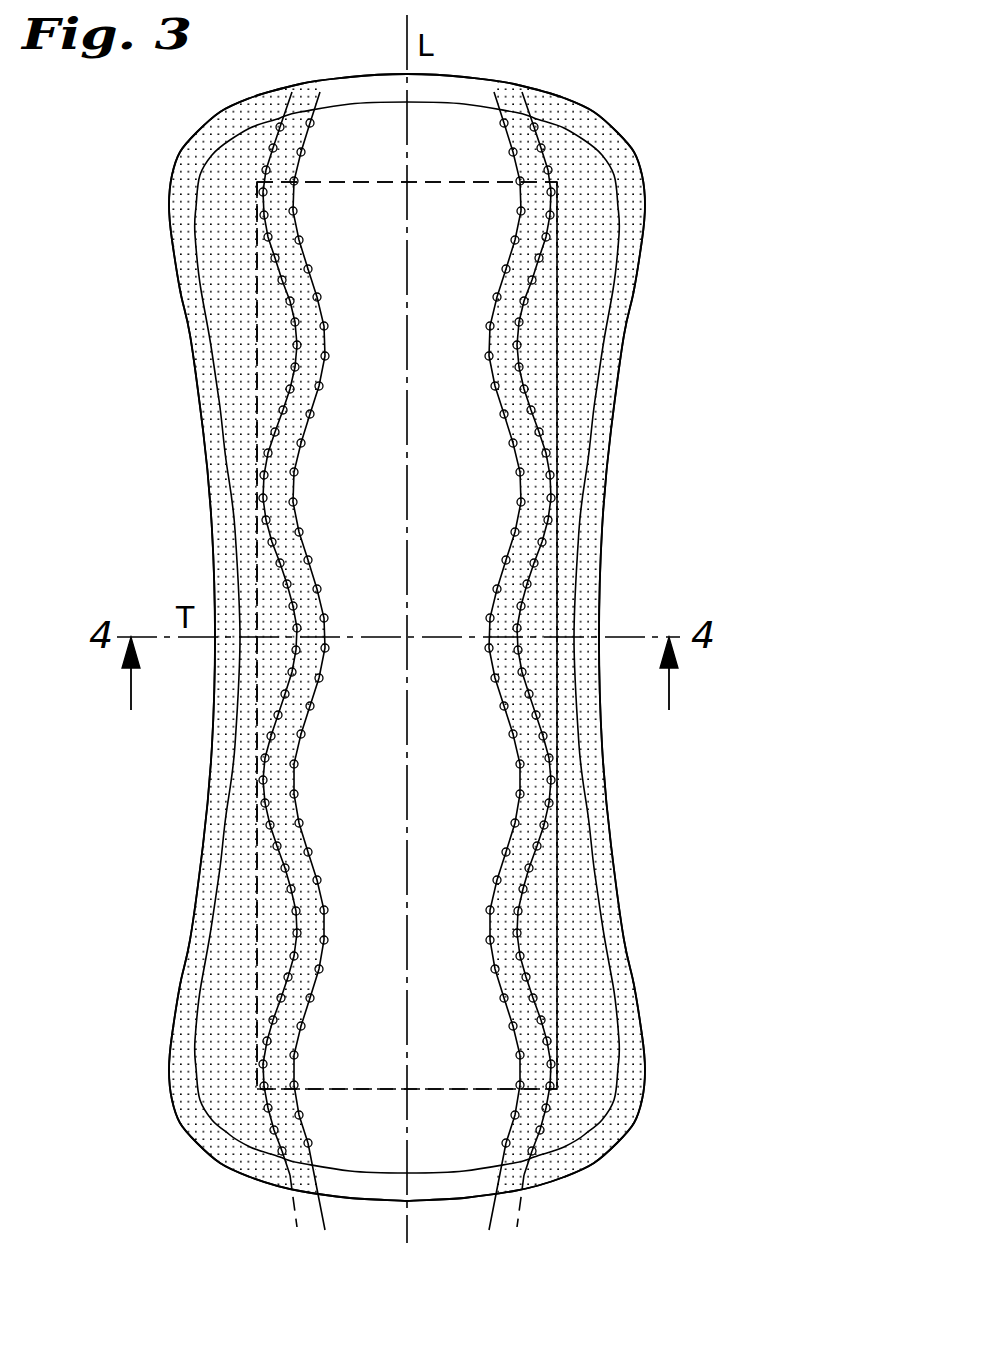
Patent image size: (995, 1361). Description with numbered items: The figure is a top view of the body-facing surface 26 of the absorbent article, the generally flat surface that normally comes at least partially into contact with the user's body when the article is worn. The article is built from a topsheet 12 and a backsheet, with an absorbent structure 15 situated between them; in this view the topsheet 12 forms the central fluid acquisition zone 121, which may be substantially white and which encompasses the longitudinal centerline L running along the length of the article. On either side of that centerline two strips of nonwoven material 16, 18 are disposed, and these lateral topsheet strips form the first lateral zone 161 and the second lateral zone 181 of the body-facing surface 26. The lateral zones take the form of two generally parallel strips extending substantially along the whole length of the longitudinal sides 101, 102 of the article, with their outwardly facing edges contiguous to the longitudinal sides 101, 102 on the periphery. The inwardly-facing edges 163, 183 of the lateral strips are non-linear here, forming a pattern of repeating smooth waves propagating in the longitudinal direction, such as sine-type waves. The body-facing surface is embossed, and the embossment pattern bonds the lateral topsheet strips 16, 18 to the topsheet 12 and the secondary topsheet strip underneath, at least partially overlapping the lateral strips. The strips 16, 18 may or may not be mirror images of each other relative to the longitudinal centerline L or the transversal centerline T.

The topsheet 12 is at (313, 793).
The absorbent structure 15 is at (257, 907).
The nonwoven strip (lateral topsheet strip) 16 is at (237, 391).
The nonwoven strip (lateral topsheet strip) 18 is at (583, 357).
The body-facing surface 26 is at (580, 1183).
The longitudinal side 101 is at (208, 475).
The longitudinal side 102 is at (607, 460).
The central fluid acquisition zone 121 is at (433, 234).
The first lateral zone 161 is at (272, 330).
The inwardly-facing edge of the lateral strip 163 is at (327, 350).
The second lateral zone 181 is at (587, 330).
The inwardly-facing edge of the lateral strip 183 is at (520, 472).